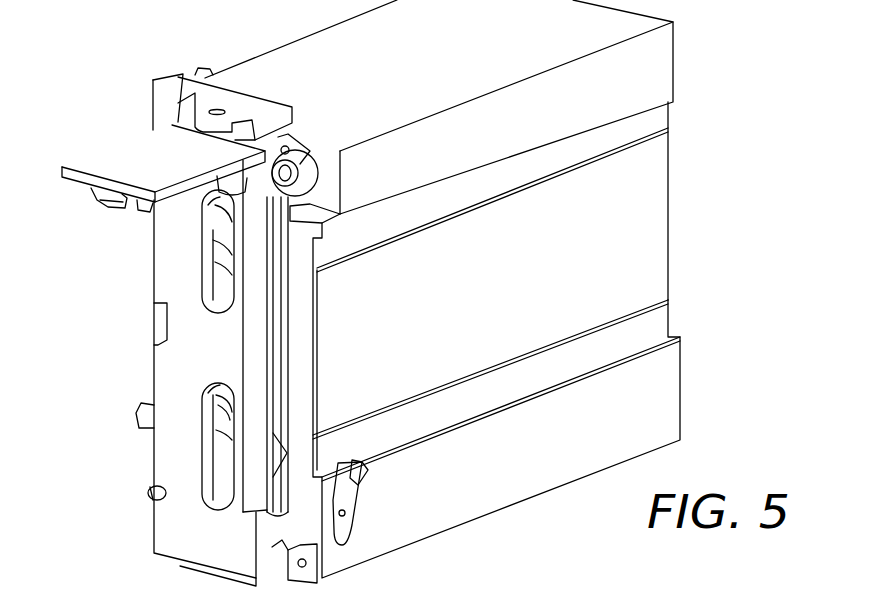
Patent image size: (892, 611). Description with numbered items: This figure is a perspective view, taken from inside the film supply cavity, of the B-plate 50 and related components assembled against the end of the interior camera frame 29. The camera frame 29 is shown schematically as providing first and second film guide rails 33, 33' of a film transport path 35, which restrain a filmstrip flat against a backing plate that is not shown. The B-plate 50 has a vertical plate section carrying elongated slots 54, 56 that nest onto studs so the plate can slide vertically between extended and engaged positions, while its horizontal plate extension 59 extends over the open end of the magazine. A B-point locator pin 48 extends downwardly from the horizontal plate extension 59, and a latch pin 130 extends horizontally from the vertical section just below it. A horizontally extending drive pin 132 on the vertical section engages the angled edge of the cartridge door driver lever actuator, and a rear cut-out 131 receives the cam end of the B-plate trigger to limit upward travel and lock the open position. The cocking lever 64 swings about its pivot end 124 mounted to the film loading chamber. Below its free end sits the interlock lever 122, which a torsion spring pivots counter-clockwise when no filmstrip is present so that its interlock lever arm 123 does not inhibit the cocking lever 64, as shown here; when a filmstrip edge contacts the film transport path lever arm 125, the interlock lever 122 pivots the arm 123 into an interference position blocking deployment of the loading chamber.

The camera frame 29 is at (440, 82).
The first film guide rail 33 is at (526, 379).
The second film guide rail 33' is at (529, 189).
The film transport path 35 is at (490, 304).
The B-point locator pin 48 is at (108, 200).
The B-plate 50 is at (143, 117).
The elongated slot 54 is at (215, 255).
The elongated slot 56 is at (213, 482).
The horizontal plate extension 59 is at (117, 160).
The cocking lever 64 is at (250, 490).
The interlock lever 122 is at (343, 497).
The interlock lever arm 123 is at (272, 547).
The pivot end 124 is at (305, 157).
The film transport path lever arm 125 is at (340, 462).
The latch pin 130 is at (140, 215).
The rear cut-out 131 is at (163, 317).
The drive pin 132 is at (148, 500).